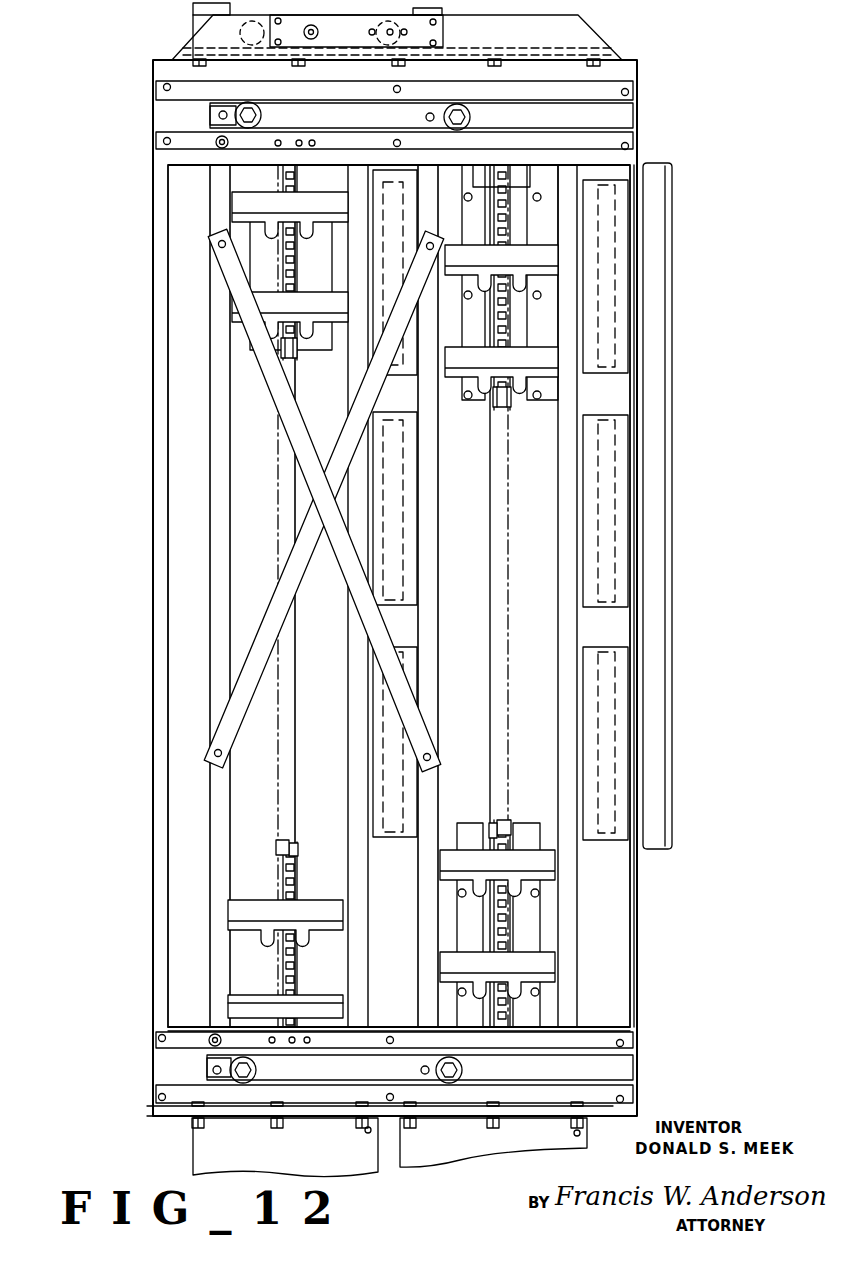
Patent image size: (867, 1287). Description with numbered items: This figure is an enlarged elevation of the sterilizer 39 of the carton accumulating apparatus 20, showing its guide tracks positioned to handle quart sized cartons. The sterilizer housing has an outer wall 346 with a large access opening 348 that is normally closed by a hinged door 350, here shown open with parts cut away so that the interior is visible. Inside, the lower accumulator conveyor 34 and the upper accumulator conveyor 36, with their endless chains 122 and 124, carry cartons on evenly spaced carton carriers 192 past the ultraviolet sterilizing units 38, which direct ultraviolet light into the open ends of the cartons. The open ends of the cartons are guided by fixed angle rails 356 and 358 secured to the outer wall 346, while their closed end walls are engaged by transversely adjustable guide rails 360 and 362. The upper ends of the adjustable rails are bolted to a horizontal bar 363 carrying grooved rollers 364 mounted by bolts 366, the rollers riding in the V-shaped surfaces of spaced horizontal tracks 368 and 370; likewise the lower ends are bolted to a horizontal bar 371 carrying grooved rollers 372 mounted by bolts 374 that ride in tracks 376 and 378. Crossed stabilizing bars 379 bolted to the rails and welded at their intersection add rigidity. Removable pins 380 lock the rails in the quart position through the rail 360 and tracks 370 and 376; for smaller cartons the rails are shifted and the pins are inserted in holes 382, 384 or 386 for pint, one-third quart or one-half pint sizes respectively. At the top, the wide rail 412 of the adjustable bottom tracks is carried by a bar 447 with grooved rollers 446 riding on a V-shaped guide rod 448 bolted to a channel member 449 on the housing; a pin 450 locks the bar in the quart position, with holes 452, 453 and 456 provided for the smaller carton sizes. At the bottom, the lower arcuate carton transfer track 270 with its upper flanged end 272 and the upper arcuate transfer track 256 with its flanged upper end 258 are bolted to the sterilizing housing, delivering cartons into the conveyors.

The carton accumulating apparatus 20 is at (690, 117).
The lower accumulator conveyor 34 is at (303, 348).
The upper accumulator conveyor 36 is at (486, 412).
The ultraviolet sterilizing units 38 is at (378, 417).
The sterilizer 39 is at (632, 292).
The endless chain 122 is at (277, 852).
The endless chain 124 is at (491, 826).
The carton carriers 192 is at (229, 208).
The upper arcuate transfer track 256 is at (478, 1150).
The flanged upper end 258 is at (565, 1120).
The lower arcuate carton transfer track 270 is at (340, 1158).
The upper flanged end 272 is at (239, 1120).
The outer wall 346 is at (157, 464).
The access opening 348 is at (170, 541).
The door 350 is at (670, 430).
The fixed angle rail 356 is at (358, 670).
The fixed angle rail 358 is at (568, 700).
The adjustable guide rail 360 is at (221, 488).
The adjustable guide rail 362 is at (438, 523).
The horizontal bar 363 is at (421, 116).
The grooved rollers 364 is at (247, 102).
The bolts 366 is at (212, 112).
The horizontal track 368 is at (184, 90).
The horizontal track 370 is at (183, 137).
The horizontal bar 371 is at (420, 1070).
The grooved rollers 372 is at (210, 1068).
The bolts 374 is at (258, 1072).
The track 376 is at (157, 1043).
The track 378 is at (175, 1097).
The crossed stabilizing bars 379 is at (340, 548).
The removable pins 380 is at (216, 143).
The holes 382 is at (276, 146).
The holes 384 is at (297, 146).
The holes 386 is at (314, 141).
The wide rail 412 is at (191, 9).
The grooved rollers 446 is at (192, 46).
The bar 447 is at (172, 52).
The V-shaped guide rod 448 is at (578, 50).
The channel member 449 is at (560, 22).
The pin 450 is at (306, 38).
The hole 452 is at (362, 36).
The hole 453 is at (392, 40).
The hole 456 is at (488, 56).